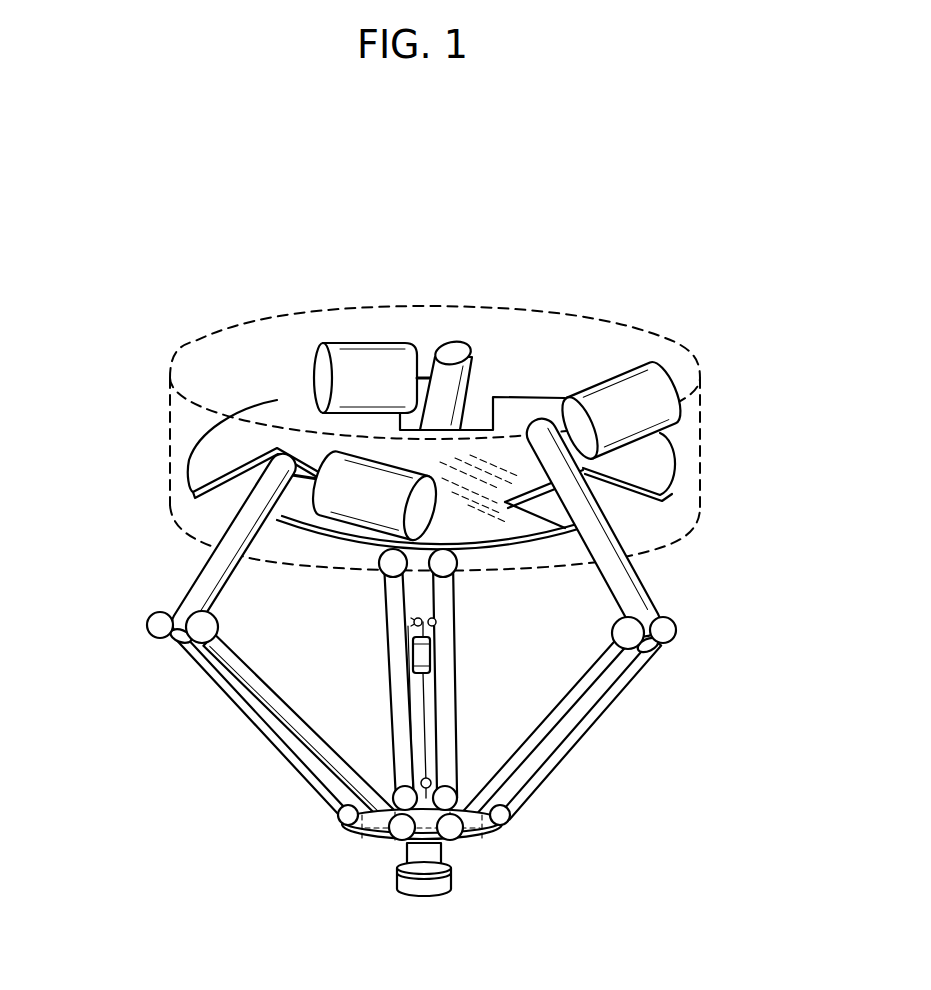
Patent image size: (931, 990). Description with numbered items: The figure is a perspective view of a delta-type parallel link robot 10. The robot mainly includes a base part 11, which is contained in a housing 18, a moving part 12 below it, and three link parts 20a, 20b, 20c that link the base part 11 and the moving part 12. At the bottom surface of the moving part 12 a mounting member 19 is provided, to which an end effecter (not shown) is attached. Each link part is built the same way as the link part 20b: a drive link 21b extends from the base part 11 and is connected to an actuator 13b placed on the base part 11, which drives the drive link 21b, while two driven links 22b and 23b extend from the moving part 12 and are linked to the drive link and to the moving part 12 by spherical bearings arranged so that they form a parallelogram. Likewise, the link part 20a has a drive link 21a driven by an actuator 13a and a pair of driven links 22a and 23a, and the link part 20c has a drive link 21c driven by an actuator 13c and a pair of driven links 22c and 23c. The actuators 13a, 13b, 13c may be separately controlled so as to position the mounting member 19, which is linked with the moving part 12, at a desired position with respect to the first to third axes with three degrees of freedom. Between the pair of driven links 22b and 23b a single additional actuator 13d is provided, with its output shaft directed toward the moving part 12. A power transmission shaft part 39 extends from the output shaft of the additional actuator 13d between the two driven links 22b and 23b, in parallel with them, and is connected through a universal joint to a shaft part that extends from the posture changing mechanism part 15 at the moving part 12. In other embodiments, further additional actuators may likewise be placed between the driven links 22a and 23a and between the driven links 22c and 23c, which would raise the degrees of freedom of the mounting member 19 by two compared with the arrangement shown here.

The parallel link robot 10 is at (284, 192).
The base part 11 is at (658, 453).
The moving part 12 is at (350, 833).
The actuator 13a is at (660, 382).
The actuator 13b is at (358, 355).
The actuator 13c is at (340, 473).
The additional actuator 13d is at (427, 653).
The posture changing mechanism part 15 is at (370, 848).
The housing 18 is at (703, 476).
The mounting member 19 is at (427, 883).
The link part 20a is at (674, 674).
The link part 20b is at (478, 591).
The link part 20c is at (138, 648).
The drive link 21a is at (632, 595).
The drive link 21b is at (451, 372).
The drive link 21c is at (250, 520).
The driven link 22a is at (540, 747).
The driven link 22b is at (445, 603).
The driven link 22c is at (252, 713).
The driven link 23a is at (610, 683).
The driven link 23b is at (393, 590).
The driven link 23c is at (273, 692).
The power transmission shaft part 39 is at (403, 699).